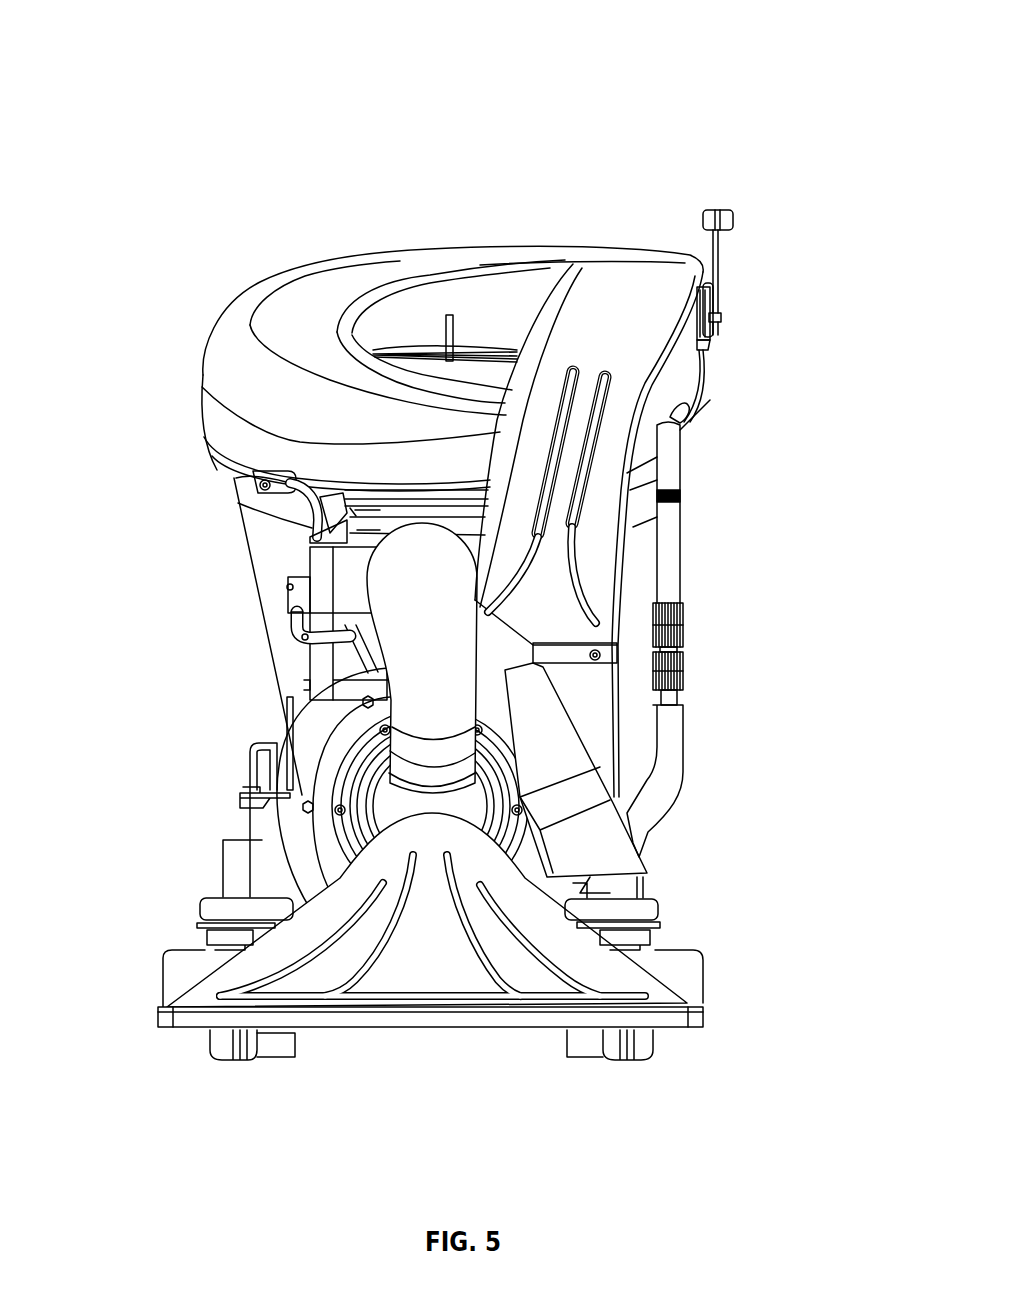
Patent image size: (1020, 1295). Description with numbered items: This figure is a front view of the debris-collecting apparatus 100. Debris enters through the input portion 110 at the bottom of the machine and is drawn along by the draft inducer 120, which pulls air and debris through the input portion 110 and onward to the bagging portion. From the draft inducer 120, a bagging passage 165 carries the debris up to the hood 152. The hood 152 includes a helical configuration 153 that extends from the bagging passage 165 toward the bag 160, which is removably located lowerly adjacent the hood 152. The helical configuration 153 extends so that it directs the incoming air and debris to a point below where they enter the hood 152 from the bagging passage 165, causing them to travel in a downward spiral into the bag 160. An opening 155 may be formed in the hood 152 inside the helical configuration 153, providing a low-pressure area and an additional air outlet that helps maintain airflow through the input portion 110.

The debris-collecting apparatus 100 is at (663, 74).
The input portion 110 is at (300, 932).
The draft inducer 120 is at (310, 762).
The hood 152 is at (550, 242).
The helical configuration 153 is at (262, 398).
The opening 155 is at (408, 332).
The bag 160 is at (205, 530).
The bagging passage 165 is at (590, 342).